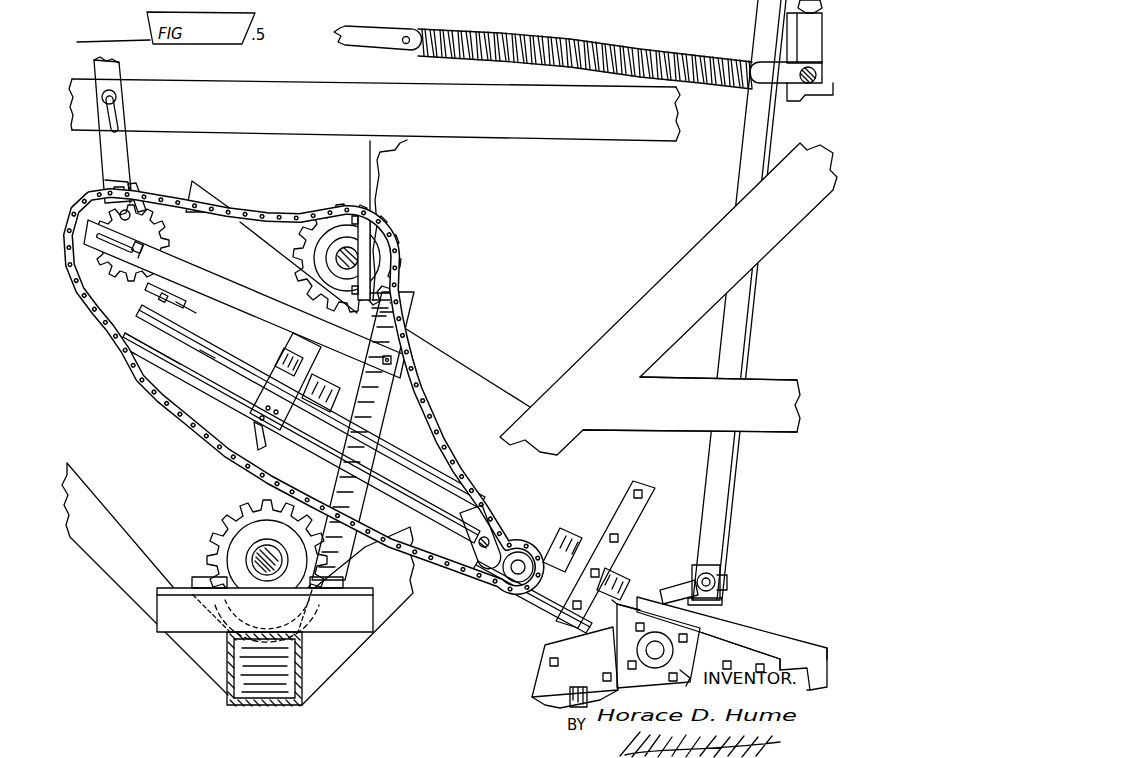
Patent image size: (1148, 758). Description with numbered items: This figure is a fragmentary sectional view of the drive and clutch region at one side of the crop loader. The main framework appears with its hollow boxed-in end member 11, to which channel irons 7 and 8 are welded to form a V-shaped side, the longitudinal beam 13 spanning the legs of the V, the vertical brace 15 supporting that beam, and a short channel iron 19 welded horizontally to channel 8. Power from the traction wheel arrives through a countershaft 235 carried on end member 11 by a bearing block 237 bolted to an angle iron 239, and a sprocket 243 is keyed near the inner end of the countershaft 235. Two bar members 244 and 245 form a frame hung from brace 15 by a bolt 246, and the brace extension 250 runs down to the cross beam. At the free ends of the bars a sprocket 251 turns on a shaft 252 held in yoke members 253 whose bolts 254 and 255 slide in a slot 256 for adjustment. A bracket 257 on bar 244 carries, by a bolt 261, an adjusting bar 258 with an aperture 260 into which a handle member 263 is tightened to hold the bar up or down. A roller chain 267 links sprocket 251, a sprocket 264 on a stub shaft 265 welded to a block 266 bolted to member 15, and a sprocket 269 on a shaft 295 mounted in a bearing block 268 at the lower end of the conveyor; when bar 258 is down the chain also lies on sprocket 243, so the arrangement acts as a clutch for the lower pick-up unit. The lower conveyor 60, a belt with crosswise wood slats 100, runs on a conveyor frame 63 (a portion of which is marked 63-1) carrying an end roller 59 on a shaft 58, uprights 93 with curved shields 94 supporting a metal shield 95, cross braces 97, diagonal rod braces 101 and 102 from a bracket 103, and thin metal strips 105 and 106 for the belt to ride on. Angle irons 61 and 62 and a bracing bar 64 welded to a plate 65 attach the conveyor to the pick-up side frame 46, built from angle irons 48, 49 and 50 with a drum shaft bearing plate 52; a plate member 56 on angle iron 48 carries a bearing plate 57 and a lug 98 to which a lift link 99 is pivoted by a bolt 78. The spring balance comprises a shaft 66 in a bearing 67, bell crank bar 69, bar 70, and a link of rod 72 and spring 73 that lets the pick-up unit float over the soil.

The channel iron 7 is at (120, 520).
The channel iron 8 is at (677, 270).
The end member 11 is at (258, 700).
The longitudinal beam 13 is at (275, 90).
The vertical brace 15 is at (410, 143).
The short channel iron 19 is at (753, 388).
The crop pick up side frame 46 is at (790, 596).
The top angle iron 48 is at (740, 630).
The angle iron 49 is at (832, 680).
The angle iron 50 is at (765, 658).
The drum shaft bearing plate 52 is at (800, 690).
The plate member 56 is at (688, 585).
The bearing plate 57 is at (683, 677).
The shaft 58 is at (627, 628).
The end roller 59 is at (673, 648).
The lower conveyor 60 is at (168, 300).
The angle iron 61 is at (618, 614).
The angle iron 62 is at (547, 647).
The conveyor frame 63 is at (183, 373).
The bar section 63-1 is at (208, 348).
The bracing bar 64 is at (573, 705).
The plate 65 is at (530, 693).
The shaft 66 is at (810, 87).
The bearing 67 is at (827, 100).
The bar 69 is at (807, 48).
The bar 70 is at (773, 80).
The rod 72 is at (377, 32).
The spring 73 is at (557, 43).
The bolt 78 is at (720, 573).
The uprights 93 is at (310, 347).
The small curved shield 94 is at (313, 390).
The metal shield 95 is at (205, 188).
The cross braces 97 is at (262, 446).
The lug 98 is at (727, 578).
The angle iron link 99 is at (737, 333).
The wood slats 100 is at (187, 312).
The diagonal rod brace 101 is at (147, 305).
The diagonal rod brace 102 is at (180, 333).
The bracket 103 is at (482, 517).
The thin metal strip 105 is at (158, 295).
The thin metal strip 106 is at (133, 353).
The countershaft 235 is at (267, 547).
The bearing block 237 is at (220, 563).
The angle iron 239 is at (177, 612).
The sprocket 243 is at (227, 547).
The bar member 244 is at (383, 363).
The bar member 245 is at (243, 285).
The bolt 246 is at (390, 358).
The brace extension 250 is at (388, 418).
The sprocket 251 is at (128, 212).
The shaft 252 is at (160, 205).
The yoke members 253 is at (170, 253).
The bolt 254 is at (150, 247).
The bolt 255 is at (155, 252).
The slot 256 is at (83, 315).
The bracket 257 is at (142, 188).
The bar 258 is at (108, 145).
The aperture 260 is at (124, 93).
The bolt 261 is at (105, 168).
The handle member 263 is at (115, 117).
The sprocket 264 is at (333, 215).
The stub shaft 265 is at (400, 240).
The block 266 is at (400, 269).
The roller chain 267 is at (110, 192).
The bearing block 268 is at (462, 545).
The sprocket 269 is at (560, 535).
The shaft 295 is at (493, 587).